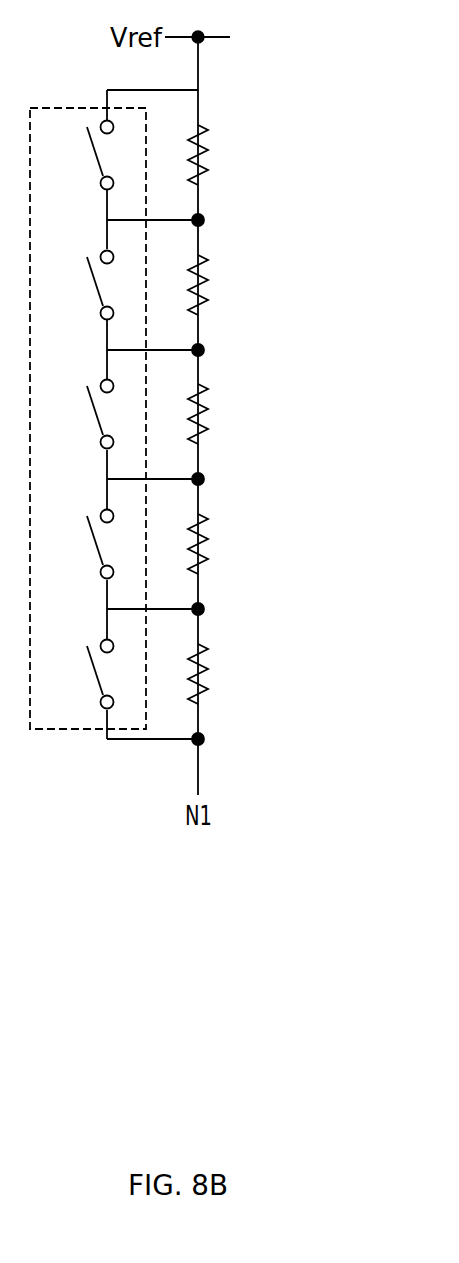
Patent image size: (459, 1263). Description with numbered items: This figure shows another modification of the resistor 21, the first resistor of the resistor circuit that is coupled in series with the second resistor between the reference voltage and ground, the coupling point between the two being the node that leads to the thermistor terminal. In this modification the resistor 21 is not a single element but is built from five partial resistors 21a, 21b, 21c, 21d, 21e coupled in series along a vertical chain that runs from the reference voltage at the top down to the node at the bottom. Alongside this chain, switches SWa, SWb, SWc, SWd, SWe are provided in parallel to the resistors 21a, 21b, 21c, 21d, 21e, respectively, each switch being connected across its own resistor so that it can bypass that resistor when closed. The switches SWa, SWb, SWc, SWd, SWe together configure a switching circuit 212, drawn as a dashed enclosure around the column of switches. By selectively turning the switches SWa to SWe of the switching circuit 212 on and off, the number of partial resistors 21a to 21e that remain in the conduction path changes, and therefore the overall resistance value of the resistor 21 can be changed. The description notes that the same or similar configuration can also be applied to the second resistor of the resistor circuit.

The resistor 21 is at (290, 192).
The resistor 21a is at (224, 155).
The resistor 21b is at (224, 285).
The resistor 21c is at (224, 414).
The resistor 21d is at (224, 544).
The resistor 21e is at (224, 674).
The switching circuit 212 is at (68, 730).
The switch SWa is at (92, 143).
The switch SWb is at (92, 273).
The switch SWc is at (92, 402).
The switch SWd is at (92, 532).
The switch SWe is at (92, 662).